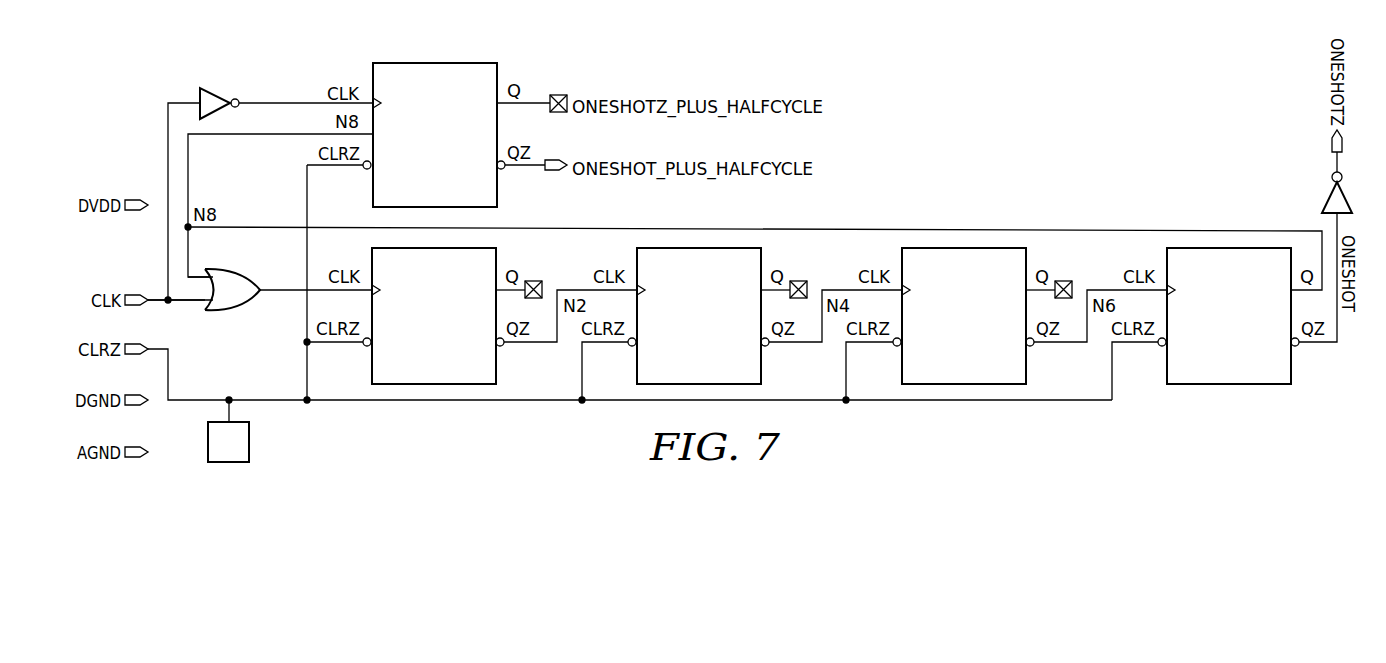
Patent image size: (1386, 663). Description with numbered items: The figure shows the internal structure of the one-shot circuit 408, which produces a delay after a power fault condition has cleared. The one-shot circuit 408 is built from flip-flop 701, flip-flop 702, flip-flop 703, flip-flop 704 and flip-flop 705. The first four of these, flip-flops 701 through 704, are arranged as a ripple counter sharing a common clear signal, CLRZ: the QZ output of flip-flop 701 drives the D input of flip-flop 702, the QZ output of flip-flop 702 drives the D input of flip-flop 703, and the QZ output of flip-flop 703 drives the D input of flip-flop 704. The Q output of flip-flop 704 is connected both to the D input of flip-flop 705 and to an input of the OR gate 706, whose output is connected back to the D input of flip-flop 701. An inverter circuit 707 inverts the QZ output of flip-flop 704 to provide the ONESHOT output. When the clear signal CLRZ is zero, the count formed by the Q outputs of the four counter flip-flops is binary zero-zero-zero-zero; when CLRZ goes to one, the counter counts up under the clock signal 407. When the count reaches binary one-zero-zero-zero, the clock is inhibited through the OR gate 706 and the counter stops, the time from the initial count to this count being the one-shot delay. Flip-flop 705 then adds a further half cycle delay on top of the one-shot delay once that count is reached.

The flip-flop 701 is at (451, 325).
The flip-flop 702 is at (716, 325).
The flip-flop 703 is at (981, 325).
The flip-flop 704 is at (1246, 325).
The flip-flop 705 is at (452, 144).
The OR gate 706 is at (228, 312).
The inverter circuit 707 is at (1328, 198).
The clock signal 407 is at (249, 443).
The one-shot circuit 408 is at (1045, 165).